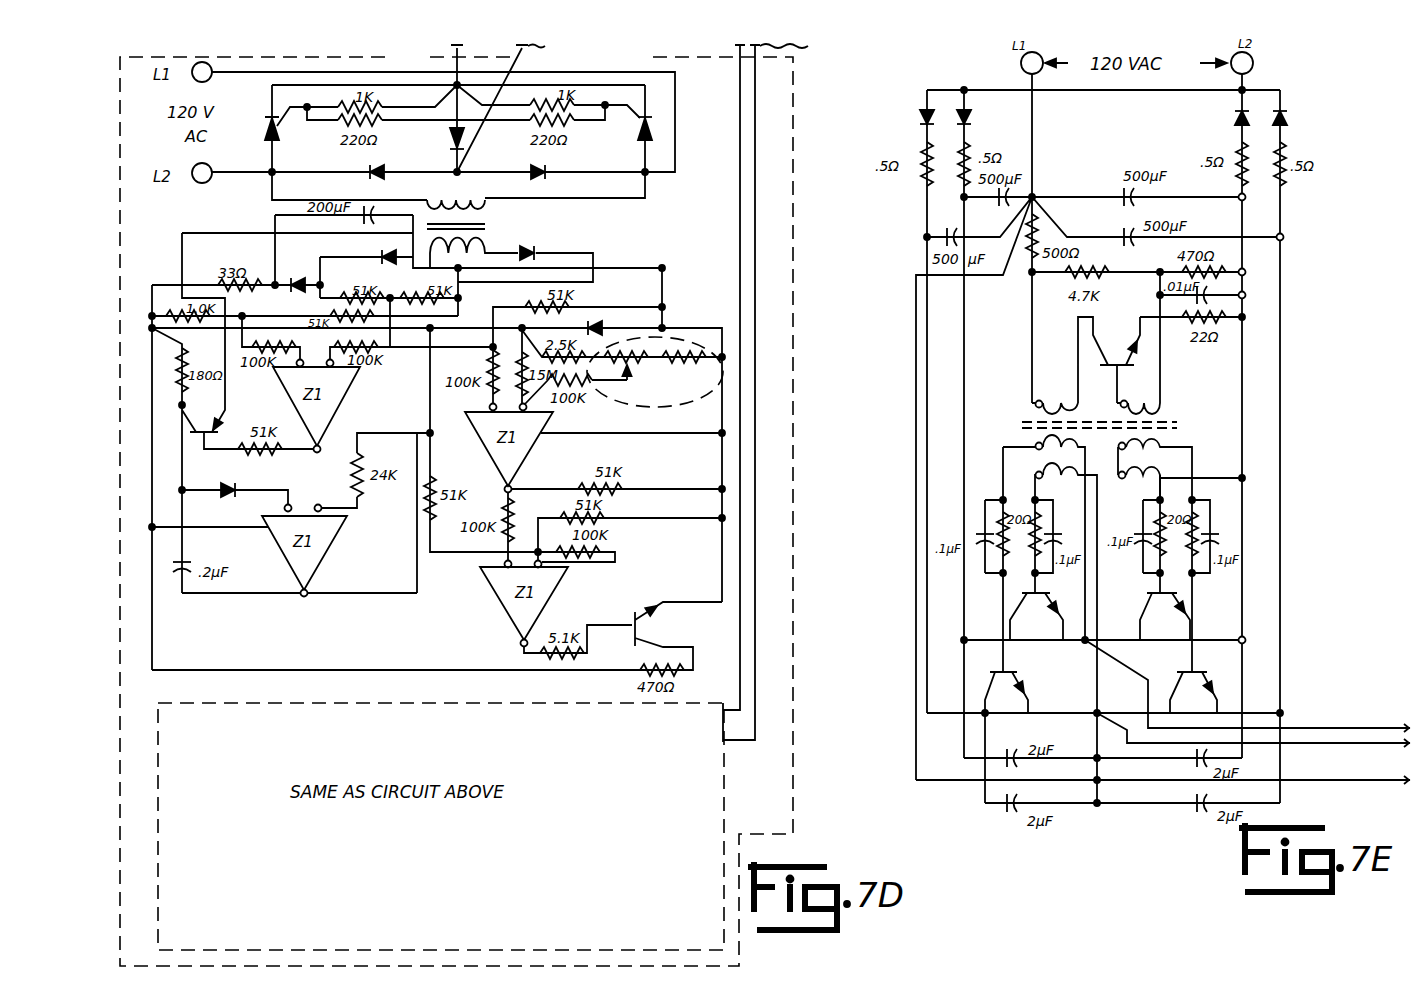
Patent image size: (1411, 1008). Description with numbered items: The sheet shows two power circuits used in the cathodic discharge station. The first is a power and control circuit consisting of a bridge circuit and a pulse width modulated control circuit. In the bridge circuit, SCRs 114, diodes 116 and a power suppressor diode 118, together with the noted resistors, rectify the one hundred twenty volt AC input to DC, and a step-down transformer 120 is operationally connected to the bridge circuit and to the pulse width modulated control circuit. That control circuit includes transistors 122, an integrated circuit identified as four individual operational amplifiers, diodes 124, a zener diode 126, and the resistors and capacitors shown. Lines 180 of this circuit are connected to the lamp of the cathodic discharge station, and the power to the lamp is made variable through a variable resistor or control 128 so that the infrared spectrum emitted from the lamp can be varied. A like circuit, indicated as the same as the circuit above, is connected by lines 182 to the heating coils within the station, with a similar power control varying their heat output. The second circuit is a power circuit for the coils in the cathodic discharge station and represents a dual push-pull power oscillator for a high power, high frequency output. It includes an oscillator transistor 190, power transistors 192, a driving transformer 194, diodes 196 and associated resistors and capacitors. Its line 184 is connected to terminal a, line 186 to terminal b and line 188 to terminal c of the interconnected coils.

In FIG. 7D, the SCR 114 is at (277, 137).
In FIG. 7D, the diode 116 is at (387, 177).
In FIG. 7D, the power suppressor diode 118 is at (452, 142).
In FIG. 7D, the step-down transformer 120 is at (488, 224).
In FIG. 7D, the transistor 122 is at (232, 428).
In FIG. 7D, the diode 124 is at (547, 240).
In FIG. 7D, the zener diode 126 is at (602, 324).
In FIG. 7D, the variable resistor or control 128 is at (660, 406).
In FIG. 7D, the lines 180 is at (449, 46).
In FIG. 7D, the lines 182 is at (758, 205).
In FIG. 7E, the line 184 is at (1347, 730).
In FIG. 7E, the line 186 is at (1335, 742).
In FIG. 7E, the line 188 is at (1328, 781).
In FIG. 7E, the oscillator transistor 190 is at (1134, 366).
In FIG. 7E, the power transistor 192 is at (1059, 633).
In FIG. 7E, the driving transformer 194 is at (1014, 421).
In FIG. 7E, the diode 196 is at (918, 119).